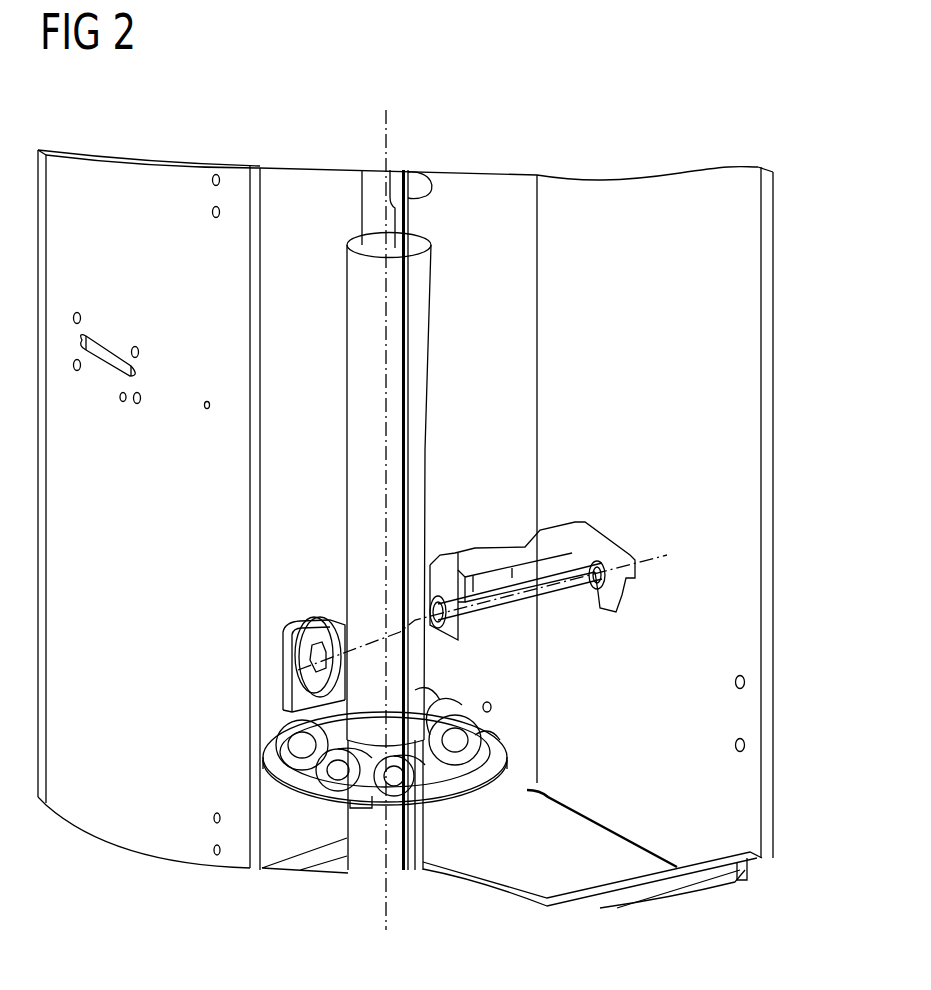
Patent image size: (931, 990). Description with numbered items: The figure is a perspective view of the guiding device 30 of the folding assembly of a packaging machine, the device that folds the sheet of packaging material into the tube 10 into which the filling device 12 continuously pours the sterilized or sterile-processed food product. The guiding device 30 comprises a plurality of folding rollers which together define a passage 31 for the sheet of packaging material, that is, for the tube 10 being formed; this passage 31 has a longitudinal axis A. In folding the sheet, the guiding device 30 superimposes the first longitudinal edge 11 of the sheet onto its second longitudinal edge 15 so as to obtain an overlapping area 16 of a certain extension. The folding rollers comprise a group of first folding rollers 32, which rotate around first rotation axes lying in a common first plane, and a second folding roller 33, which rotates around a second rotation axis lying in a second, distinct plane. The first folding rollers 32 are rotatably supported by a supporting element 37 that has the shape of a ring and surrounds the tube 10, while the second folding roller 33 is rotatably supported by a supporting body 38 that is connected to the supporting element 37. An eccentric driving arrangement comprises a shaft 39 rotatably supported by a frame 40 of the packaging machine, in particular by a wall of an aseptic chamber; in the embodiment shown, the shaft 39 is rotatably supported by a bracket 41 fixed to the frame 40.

The longitudinal axis A is at (386, 148).
The tube 10 is at (395, 875).
The first longitudinal edge 11 is at (388, 322).
The filling device 12 is at (410, 223).
The second longitudinal edge 15 is at (420, 300).
The overlapping area 16 is at (378, 480).
The guiding device 30 is at (224, 590).
The passage 31 is at (462, 690).
The first folding rollers 32 is at (300, 752).
The second folding roller 33 is at (320, 632).
The supporting element 37 is at (497, 772).
The supporting body 38 is at (290, 672).
The shaft 39 is at (552, 588).
The frame 40 is at (758, 490).
The bracket 41 is at (552, 536).